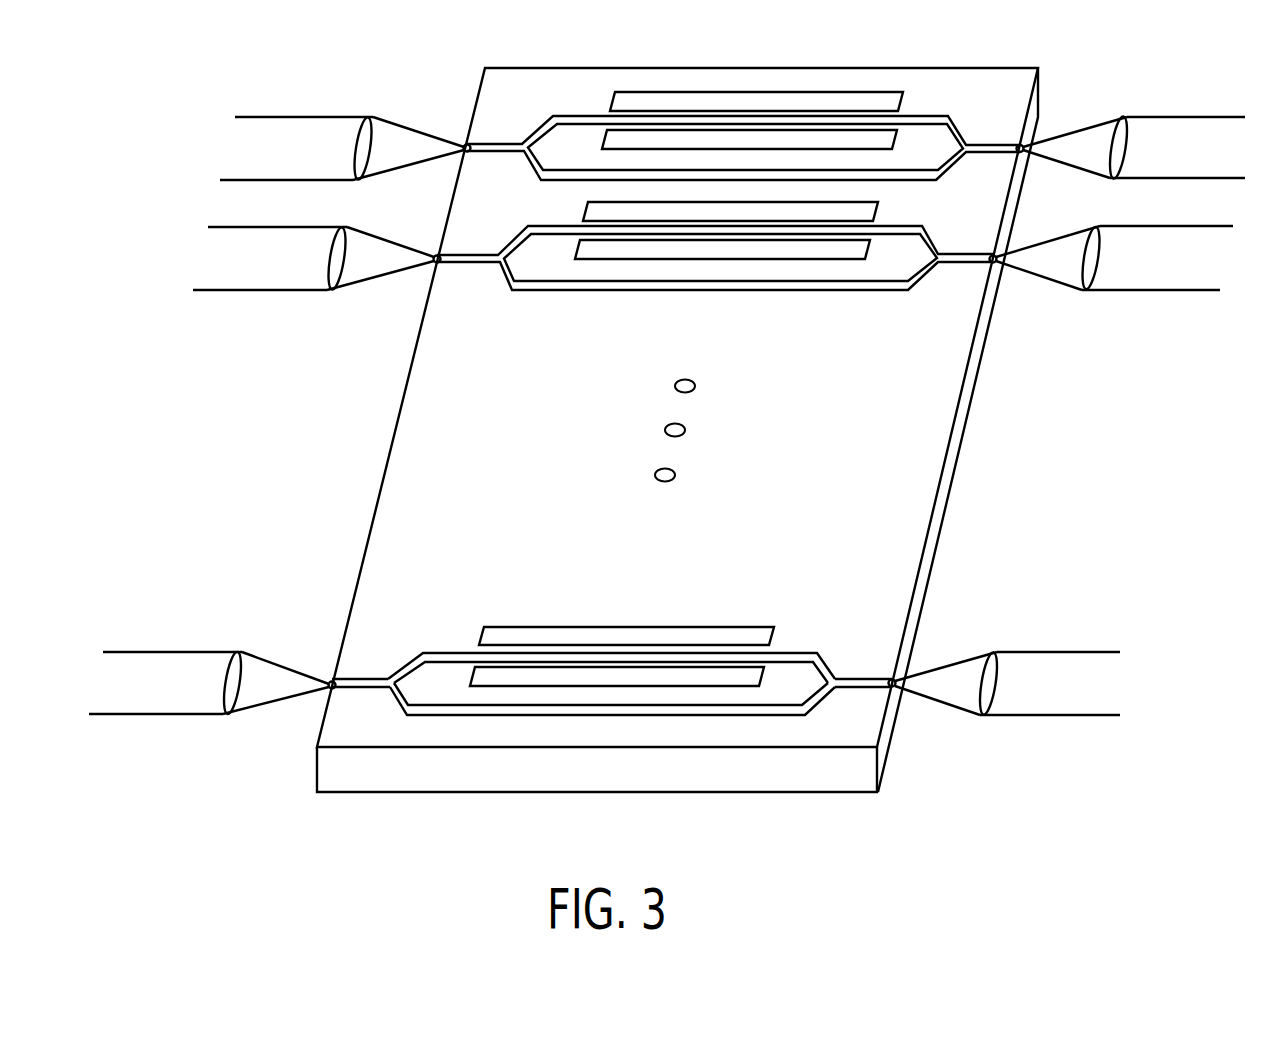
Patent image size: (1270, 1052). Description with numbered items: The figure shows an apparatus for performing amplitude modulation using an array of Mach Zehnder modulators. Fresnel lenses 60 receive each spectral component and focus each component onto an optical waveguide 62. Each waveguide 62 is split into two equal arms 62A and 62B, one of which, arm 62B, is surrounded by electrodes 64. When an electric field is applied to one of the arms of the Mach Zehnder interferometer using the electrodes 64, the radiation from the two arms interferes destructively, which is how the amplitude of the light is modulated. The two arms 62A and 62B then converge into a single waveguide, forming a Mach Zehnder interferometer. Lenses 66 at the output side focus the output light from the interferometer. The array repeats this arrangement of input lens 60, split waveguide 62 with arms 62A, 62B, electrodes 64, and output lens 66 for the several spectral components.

The Fresnel lens 60 is at (327, 256).
The optical waveguide 62 is at (642, 498).
The first waveguide arm 62A is at (414, 710).
The second waveguide arm 62B is at (425, 652).
The electrodes 64 is at (755, 609).
The lens 66 is at (1000, 680).